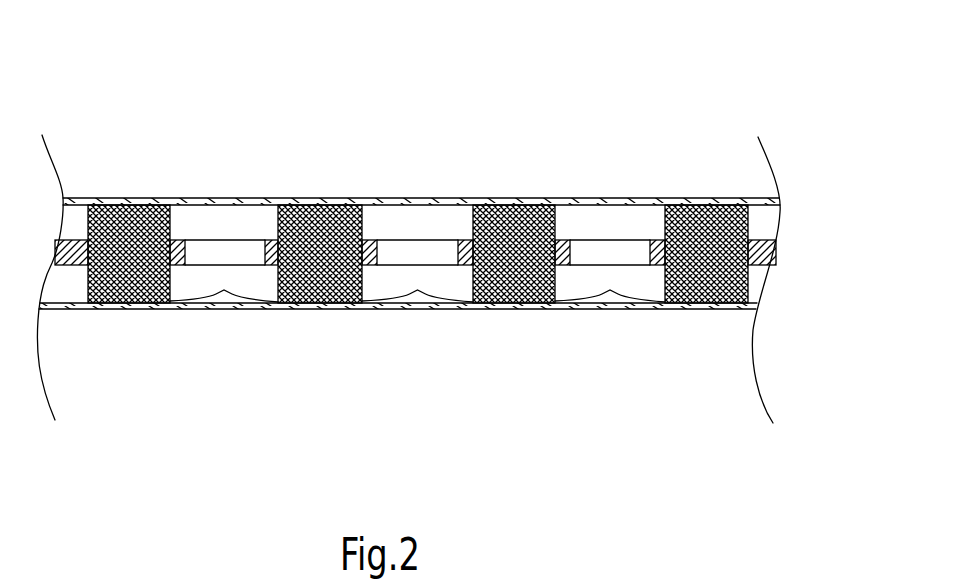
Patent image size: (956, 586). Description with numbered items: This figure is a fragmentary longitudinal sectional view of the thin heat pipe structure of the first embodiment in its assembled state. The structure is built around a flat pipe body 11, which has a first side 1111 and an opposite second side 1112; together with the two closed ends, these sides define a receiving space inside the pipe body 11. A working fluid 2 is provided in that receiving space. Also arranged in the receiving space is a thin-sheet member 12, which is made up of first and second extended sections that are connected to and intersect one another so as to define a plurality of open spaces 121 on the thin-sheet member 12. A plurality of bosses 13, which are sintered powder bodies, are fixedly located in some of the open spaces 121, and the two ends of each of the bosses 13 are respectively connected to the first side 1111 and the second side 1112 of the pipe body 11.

The pipe body 11 is at (728, 198).
The first side 1111 is at (388, 200).
The second side 1112 is at (385, 303).
The thin-sheet member 12 is at (73, 237).
The open spaces 121 is at (587, 252).
The bosses 13 is at (120, 197).
The working fluid 2 is at (220, 293).